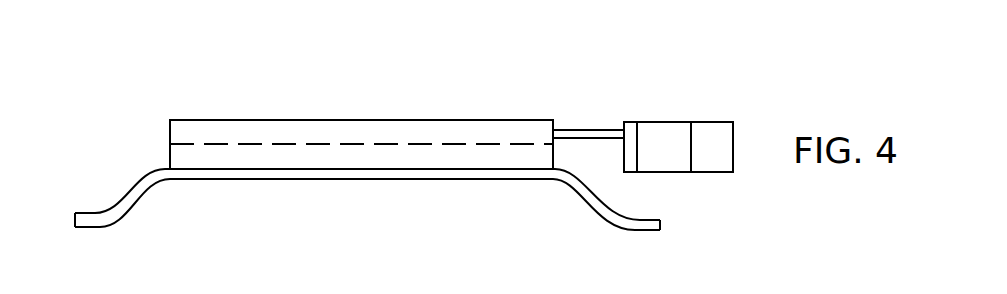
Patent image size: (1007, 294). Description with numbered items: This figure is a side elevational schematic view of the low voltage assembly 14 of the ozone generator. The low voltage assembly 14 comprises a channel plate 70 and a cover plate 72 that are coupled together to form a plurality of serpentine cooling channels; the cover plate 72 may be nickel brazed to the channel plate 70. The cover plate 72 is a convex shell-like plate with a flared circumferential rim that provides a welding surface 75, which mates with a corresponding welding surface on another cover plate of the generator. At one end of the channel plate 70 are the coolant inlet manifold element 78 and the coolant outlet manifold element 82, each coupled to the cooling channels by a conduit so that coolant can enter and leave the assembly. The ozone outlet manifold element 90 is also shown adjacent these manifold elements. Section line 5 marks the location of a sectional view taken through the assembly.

The low voltage assembly 14 is at (431, 51).
The channel plate 70 is at (447, 120).
The section line 5- 5 is at (170, 145).
The ozone outlet manifold element 90 is at (626, 122).
The coolant outlet manifold element 82 is at (663, 122).
The coolant inlet manifold element 78 is at (712, 122).
The cover plate 72 is at (582, 205).
The welding surface 75 is at (643, 231).